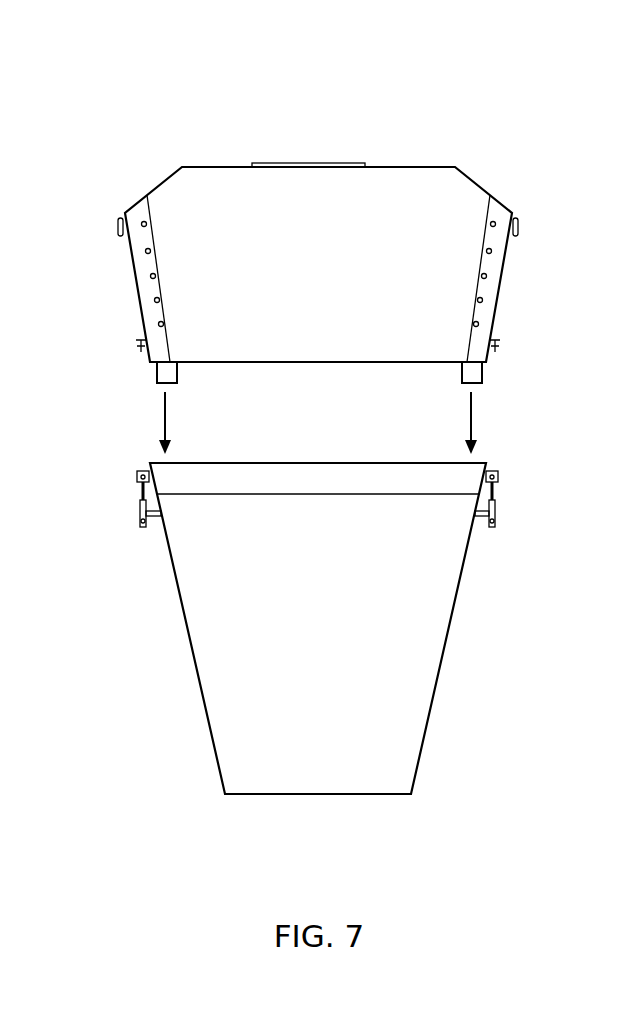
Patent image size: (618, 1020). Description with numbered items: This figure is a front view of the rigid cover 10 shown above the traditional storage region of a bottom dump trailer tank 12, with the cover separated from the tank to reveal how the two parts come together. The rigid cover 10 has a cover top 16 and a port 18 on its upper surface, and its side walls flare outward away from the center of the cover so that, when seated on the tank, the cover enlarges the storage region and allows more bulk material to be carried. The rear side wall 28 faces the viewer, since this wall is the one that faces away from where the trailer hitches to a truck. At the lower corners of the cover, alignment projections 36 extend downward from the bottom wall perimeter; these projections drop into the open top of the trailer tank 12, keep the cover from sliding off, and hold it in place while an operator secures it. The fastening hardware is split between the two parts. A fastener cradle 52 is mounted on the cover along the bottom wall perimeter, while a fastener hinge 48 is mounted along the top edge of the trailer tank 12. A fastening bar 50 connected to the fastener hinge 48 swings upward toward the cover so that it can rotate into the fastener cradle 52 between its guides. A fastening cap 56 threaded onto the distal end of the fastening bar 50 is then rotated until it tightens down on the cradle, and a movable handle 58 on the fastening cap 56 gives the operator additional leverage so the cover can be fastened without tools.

The rigid cover 10 is at (188, 112).
The bottom dump trailer tank 12 is at (422, 720).
The cover top 16 is at (150, 195).
The port 18 is at (320, 163).
The rear side wall 28 is at (304, 285).
The alignment projection 36 is at (162, 378).
The fastener hinge 48 is at (137, 470).
The fastening bar 50 is at (143, 490).
The fastener cradle 52 is at (138, 343).
The fastening cap 56 is at (140, 512).
The movable handle 58 is at (148, 517).